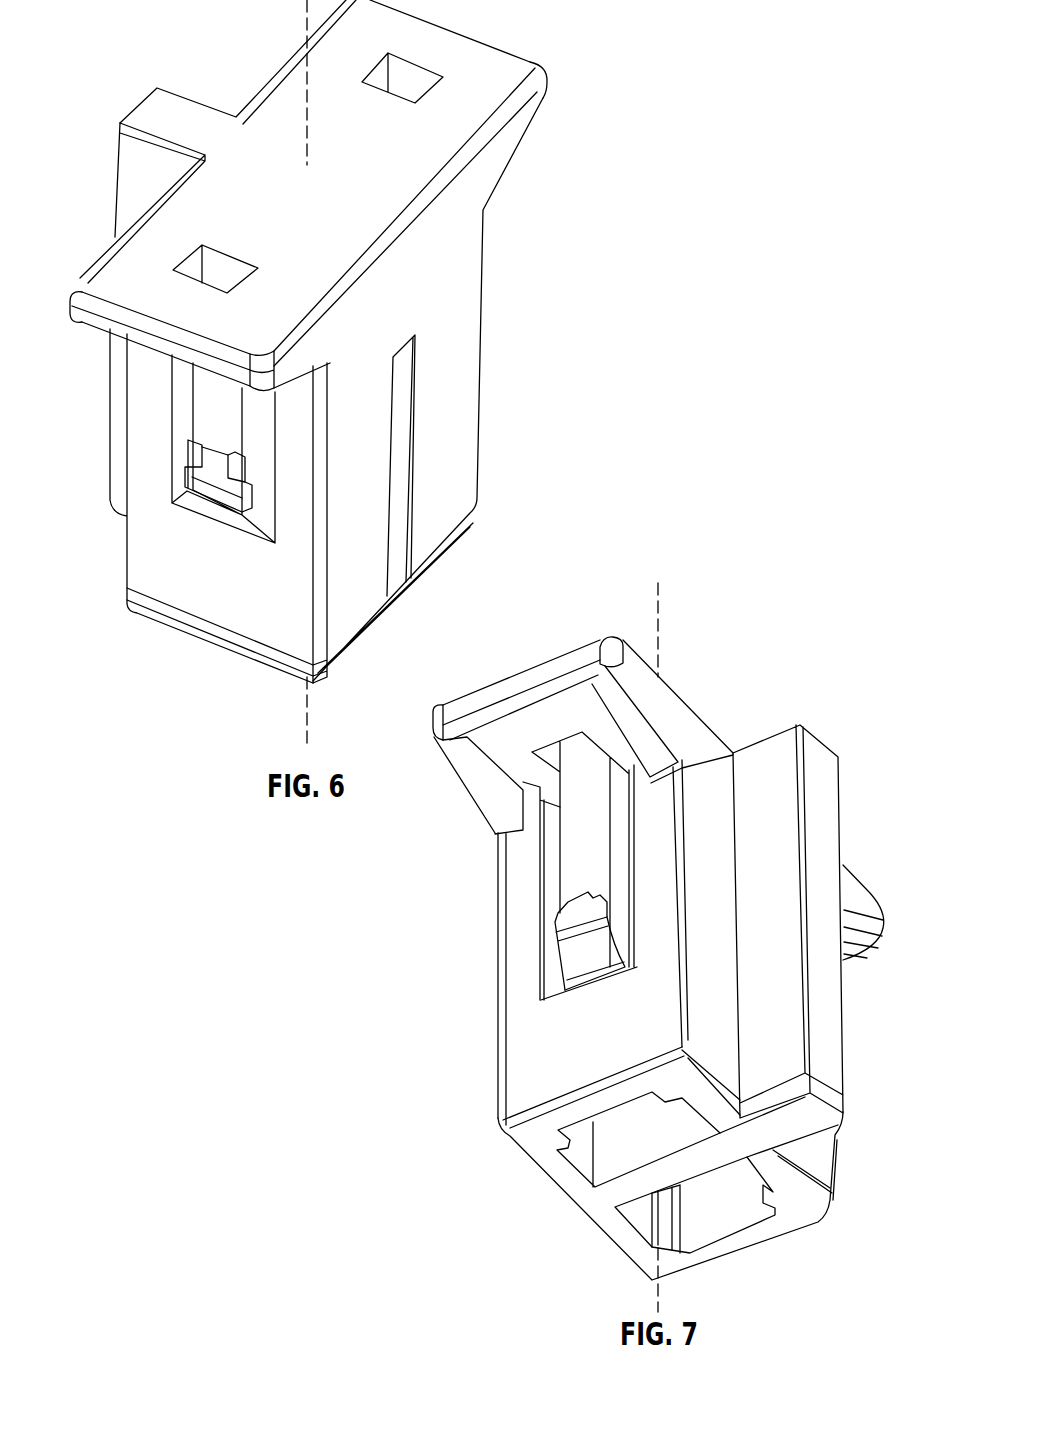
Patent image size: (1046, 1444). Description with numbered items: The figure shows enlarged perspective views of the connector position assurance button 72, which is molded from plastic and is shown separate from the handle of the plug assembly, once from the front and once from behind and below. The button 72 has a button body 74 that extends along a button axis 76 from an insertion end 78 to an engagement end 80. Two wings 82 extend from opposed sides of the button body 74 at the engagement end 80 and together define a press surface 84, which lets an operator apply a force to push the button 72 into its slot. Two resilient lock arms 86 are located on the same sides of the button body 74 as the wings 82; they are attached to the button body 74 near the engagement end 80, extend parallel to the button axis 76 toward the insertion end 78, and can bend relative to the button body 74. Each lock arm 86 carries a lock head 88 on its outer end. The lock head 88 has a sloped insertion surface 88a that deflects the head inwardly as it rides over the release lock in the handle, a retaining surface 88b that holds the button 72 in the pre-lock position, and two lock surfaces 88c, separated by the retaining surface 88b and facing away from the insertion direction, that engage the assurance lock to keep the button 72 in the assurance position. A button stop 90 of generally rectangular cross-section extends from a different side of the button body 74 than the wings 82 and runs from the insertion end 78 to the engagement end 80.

In FIG. 6, the connector position assurance button 72 is at (282, 90).
In FIG. 7, the connector position assurance button 72 is at (700, 741).
In FIG. 6, the button body 74 is at (470, 347).
In FIG. 7, the button body 74 is at (510, 930).
In FIG. 6, the button axis 76 is at (302, 701).
In FIG. 7, the button axis 76 is at (665, 604).
In FIG. 6, the insertion end 78 is at (473, 517).
In FIG. 7, the insertion end 78 is at (797, 1222).
In FIG. 6, the engagement end 80 is at (473, 147).
In FIG. 7, the engagement end 80 is at (677, 694).
In FIG. 6, the wings 82 is at (523, 92).
In FIG. 7, the wings 82 is at (508, 691).
In FIG. 6, the press surface 84 is at (208, 212).
In FIG. 6, the lock arms 86 is at (200, 390).
In FIG. 7, the lock arms 86 is at (567, 842).
In FIG. 6, the lock head 88 is at (205, 478).
In FIG. 7, the lock head 88 is at (578, 925).
In FIG. 6, the insertion surface 88a is at (213, 500).
In FIG. 7, the insertion surface 88a is at (578, 955).
In FIG. 6, the retaining surface 88b is at (215, 447).
In FIG. 6, the lock surfaces 88c is at (200, 452).
In FIG. 6, the button stop 90 is at (150, 112).
In FIG. 7, the button stop 90 is at (813, 1130).